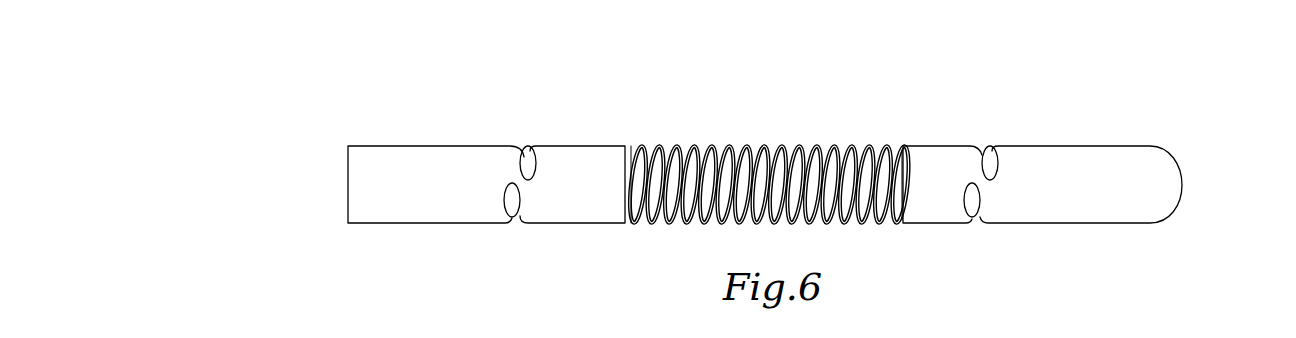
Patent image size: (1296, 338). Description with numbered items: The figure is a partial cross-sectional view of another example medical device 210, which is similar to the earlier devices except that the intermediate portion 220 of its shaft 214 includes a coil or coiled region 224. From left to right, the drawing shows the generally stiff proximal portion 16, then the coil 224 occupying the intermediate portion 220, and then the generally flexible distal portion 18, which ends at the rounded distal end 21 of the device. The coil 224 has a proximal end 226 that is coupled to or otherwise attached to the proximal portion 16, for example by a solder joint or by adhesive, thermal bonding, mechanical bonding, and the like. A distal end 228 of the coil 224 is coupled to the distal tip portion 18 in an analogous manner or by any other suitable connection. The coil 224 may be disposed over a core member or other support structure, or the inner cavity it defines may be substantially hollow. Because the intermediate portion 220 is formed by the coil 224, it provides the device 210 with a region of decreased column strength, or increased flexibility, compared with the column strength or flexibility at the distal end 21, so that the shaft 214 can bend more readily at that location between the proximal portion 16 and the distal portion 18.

The proximal portion 16 is at (387, 182).
The distal portion 18 is at (1078, 150).
The distal end 21 is at (1182, 185).
The medical device 210 is at (595, 130).
The shaft 214 is at (605, 144).
The intermediate portion 220 is at (803, 170).
The coil 224 is at (728, 144).
The proximal end 226 is at (632, 146).
The distal end 228 is at (902, 183).